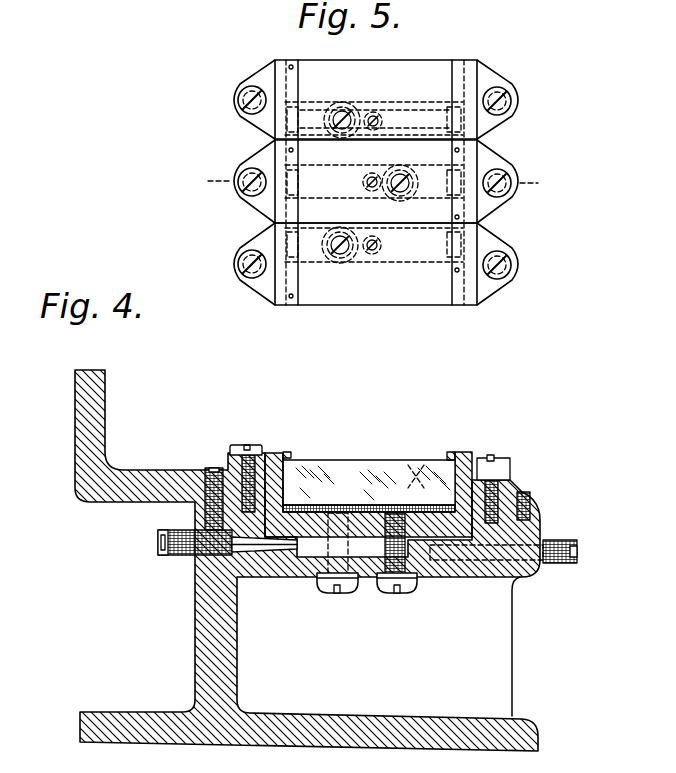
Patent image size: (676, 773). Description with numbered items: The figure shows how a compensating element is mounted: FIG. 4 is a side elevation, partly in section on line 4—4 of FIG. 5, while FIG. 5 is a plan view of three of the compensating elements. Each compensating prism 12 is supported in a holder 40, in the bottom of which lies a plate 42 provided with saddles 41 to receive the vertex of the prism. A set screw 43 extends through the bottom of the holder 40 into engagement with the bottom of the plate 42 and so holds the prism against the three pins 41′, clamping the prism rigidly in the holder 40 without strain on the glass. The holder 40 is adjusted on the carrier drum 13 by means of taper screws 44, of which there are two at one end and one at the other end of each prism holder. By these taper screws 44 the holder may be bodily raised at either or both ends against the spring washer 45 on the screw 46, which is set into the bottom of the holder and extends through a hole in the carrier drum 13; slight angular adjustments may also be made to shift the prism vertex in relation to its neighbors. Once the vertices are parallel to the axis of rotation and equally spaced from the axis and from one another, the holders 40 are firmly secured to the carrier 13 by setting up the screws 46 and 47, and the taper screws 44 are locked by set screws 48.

In FIG. 5, the section line 4 is at (372, 183).
In FIG. 5, the compensating prism 12 is at (423, 68).
In FIG. 4, the compensating prism 12 is at (348, 470).
In FIG. 4, the carrier drum 13 is at (195, 645).
In FIG. 5, the holder 40 is at (477, 305).
In FIG. 4, the holder 40 is at (463, 453).
In FIG. 5, the saddles 41 is at (408, 182).
In FIG. 4, the saddles 41 is at (356, 465).
In FIG. 5, the pins 41' is at (374, 162).
In FIG. 4, the pins 41' is at (342, 450).
In FIG. 5, the plate 42 is at (351, 172).
In FIG. 4, the plate 42 is at (385, 512).
In FIG. 5, the set screw 43 is at (366, 199).
In FIG. 4, the set screw 43 is at (362, 575).
In FIG. 4, the taper screws 44 is at (160, 543).
In FIG. 4, the spring washer 45 is at (318, 580).
In FIG. 4, the screw 46 is at (333, 596).
In FIG. 5, the screw 47 is at (503, 197).
In FIG. 4, the screw 47 is at (500, 455).
In FIG. 4, the set screws 48 is at (210, 468).